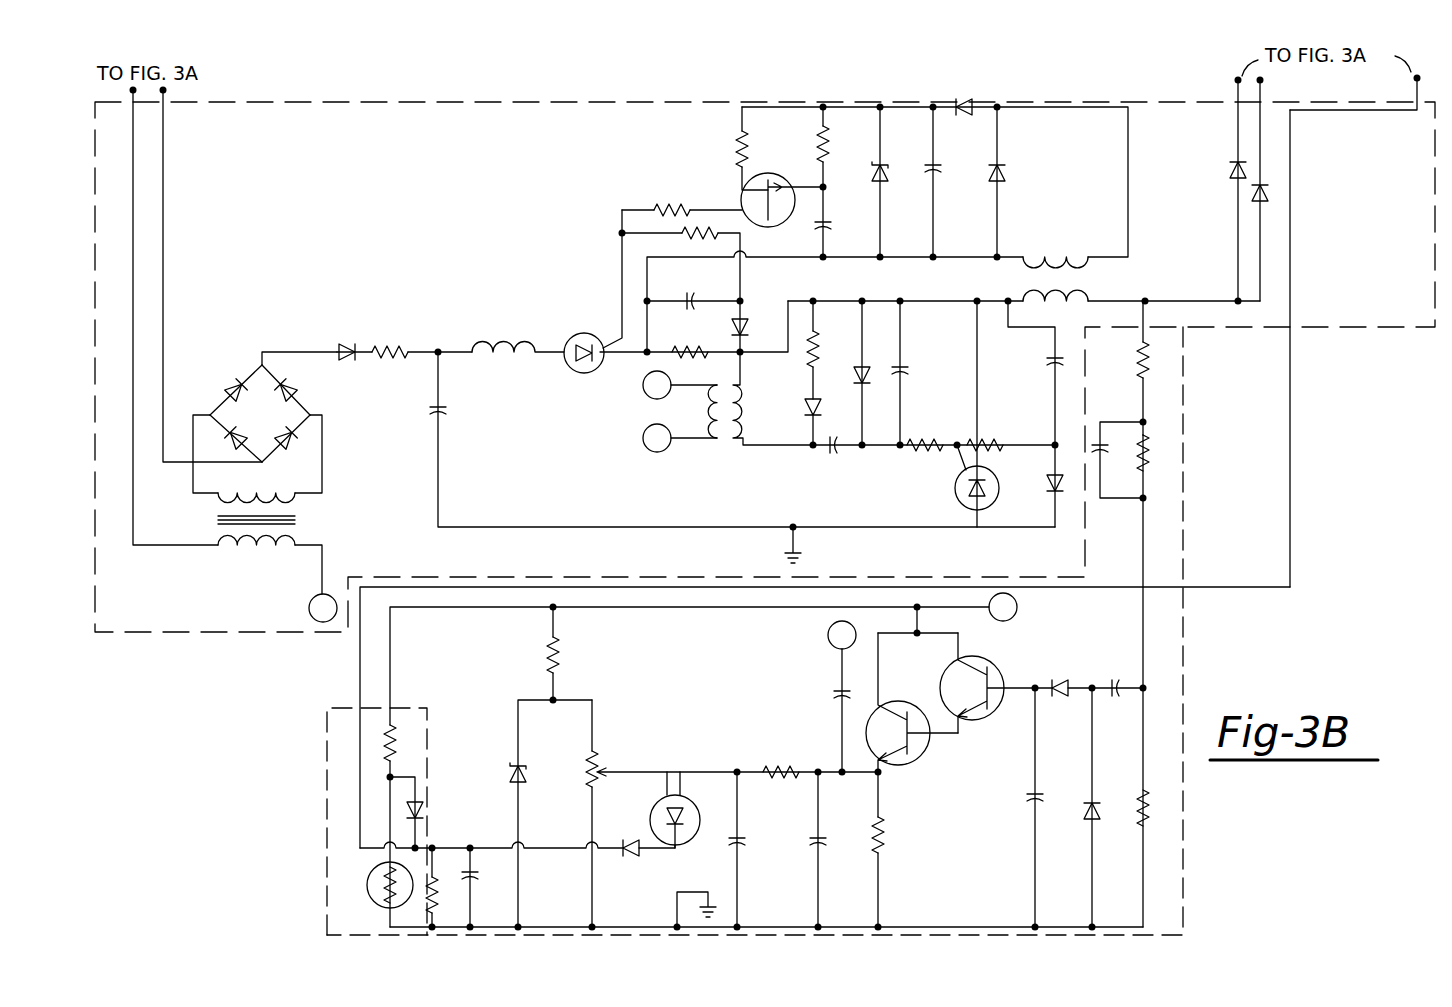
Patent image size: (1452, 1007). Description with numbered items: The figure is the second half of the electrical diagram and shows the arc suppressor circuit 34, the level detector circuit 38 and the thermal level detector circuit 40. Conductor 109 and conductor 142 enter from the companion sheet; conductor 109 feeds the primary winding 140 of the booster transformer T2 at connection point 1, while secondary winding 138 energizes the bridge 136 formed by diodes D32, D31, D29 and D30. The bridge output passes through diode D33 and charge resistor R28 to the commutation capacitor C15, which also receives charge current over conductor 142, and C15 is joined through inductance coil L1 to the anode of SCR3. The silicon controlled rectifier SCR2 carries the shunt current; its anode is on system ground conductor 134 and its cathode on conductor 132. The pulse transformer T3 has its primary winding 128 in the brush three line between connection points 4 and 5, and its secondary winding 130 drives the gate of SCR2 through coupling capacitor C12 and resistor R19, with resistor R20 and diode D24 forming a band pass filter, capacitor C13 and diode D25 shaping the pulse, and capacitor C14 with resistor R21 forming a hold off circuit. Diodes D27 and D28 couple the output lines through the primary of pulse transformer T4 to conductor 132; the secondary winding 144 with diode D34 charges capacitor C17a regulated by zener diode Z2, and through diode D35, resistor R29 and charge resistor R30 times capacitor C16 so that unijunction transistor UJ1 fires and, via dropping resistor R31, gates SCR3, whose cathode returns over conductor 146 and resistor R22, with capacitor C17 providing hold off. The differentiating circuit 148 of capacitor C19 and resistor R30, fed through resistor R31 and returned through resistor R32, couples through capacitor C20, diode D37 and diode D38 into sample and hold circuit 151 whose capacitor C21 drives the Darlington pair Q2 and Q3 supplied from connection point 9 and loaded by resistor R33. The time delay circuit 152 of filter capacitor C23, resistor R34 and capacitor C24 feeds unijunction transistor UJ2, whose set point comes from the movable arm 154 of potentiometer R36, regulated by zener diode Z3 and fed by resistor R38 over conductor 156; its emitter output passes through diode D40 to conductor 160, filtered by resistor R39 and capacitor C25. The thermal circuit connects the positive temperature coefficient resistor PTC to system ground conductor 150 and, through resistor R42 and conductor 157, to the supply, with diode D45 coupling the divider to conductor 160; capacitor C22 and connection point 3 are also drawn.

The arc suppressor circuit 34 is at (310, 93).
The level detector circuit 38 is at (1198, 659).
The thermal level detector circuit 40 is at (314, 802).
The conductor 142 is at (166, 162).
The conductor 109 is at (133, 278).
The full wave rectifier bridge / primary winding 136 is at (250, 362).
The diode D32 is at (230, 385).
The diode D31 is at (285, 387).
The diode D29 is at (232, 437).
The diode D30 is at (288, 446).
The secondary winding 138 is at (257, 498).
The booster transformer T2 is at (300, 516).
The primary winding 140 is at (268, 549).
The connection point 1 is at (316, 583).
The diode D33 is at (344, 334).
The charge resistor R28 is at (392, 340).
The commutation capacitor C15 is at (444, 410).
The inductance coil L1 is at (490, 336).
The silicon controlled rectifier SCR3 is at (584, 333).
The dropping resistor R31 is at (690, 198).
The resistor R29 is at (740, 148).
The unijunction transistor UJ1 is at (774, 176).
The charge resistor R30 is at (1005, 301).
The charge capacitor C16 is at (832, 224).
The zener diode Z2 is at (884, 166).
The charge storage capacitor C17a is at (938, 167).
The diode D35 is at (968, 100).
The diode D34 is at (1006, 177).
The conductor 146 is at (760, 256).
The secondary winding 144 is at (1056, 263).
The pulse transformer T4 is at (1016, 283).
The conductor 132 is at (760, 352).
The diode D28 is at (1232, 175).
The diode D27 is at (1268, 198).
The conductor 160 is at (1412, 116).
The capacitor C17 is at (694, 287).
The resistor R22 is at (693, 341).
The connection point 4 is at (680, 385).
The connection point 5 is at (680, 438).
The primary winding 128 is at (690, 411).
The secondary winding 130 is at (740, 412).
The pulse transformer T3 is at (726, 448).
The resistor R20 is at (836, 350).
The diode D24 is at (808, 400).
The diode D25 is at (870, 375).
The capacitor C13 is at (930, 376).
The coupling capacitor C12 is at (856, 463).
The resistor R19 is at (930, 427).
The resistor R21 is at (1008, 428).
The capacitor C14 is at (1048, 358).
The silicon controlled rectifier SCR2 is at (955, 489).
The system ground conductor 134 is at (847, 508).
The capacitor C19 is at (1100, 440).
The differentiating circuit 148 is at (1170, 430).
The conductor 157 is at (467, 610).
The conductor 156 is at (677, 618).
The resistor R38 is at (560, 665).
The connection point 3 is at (842, 635).
The connection point 9 is at (1003, 607).
The n-p-n transistor Q3 is at (895, 705).
The n-p-n transistor Q2 is at (978, 666).
The sample and hold circuit 151 is at (1065, 666).
The diode D37 is at (1064, 707).
The coupling capacitor C20 is at (1126, 672).
The sample and hold capacitor C21 is at (1027, 795).
The diode D38 is at (1087, 826).
The resistor R32 is at (1138, 800).
The resistor R42 is at (412, 753).
The diode D45 is at (425, 806).
The positive temperature coefficient resistor PTC is at (367, 884).
The resistor R39 is at (452, 888).
The capacitor C25 is at (476, 874).
The zener diode Z3 is at (518, 762).
The potentiometer R36 is at (568, 815).
The movable arm 154 is at (608, 768).
The unijunction transistor UJ2 is at (673, 790).
The diode D40 is at (626, 858).
The time delay circuit 152 is at (738, 762).
The resistor R34 is at (787, 754).
The capacitor C22 is at (838, 696).
The capacitor C24 is at (743, 841).
The filter capacitor C23 is at (824, 841).
The load resistor R33 is at (884, 836).
The system ground conductor 150 is at (945, 926).